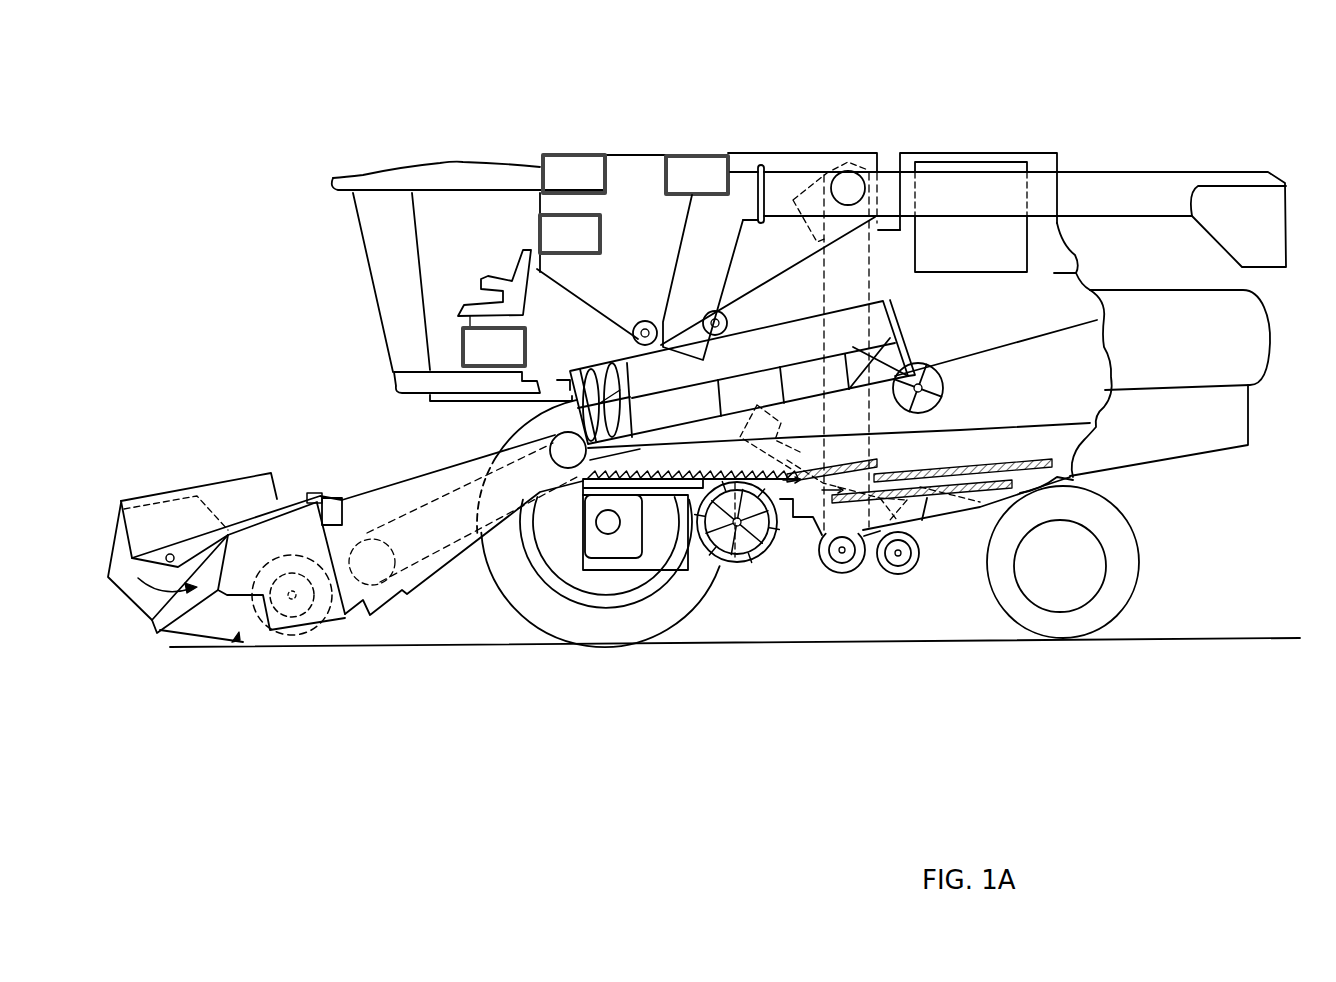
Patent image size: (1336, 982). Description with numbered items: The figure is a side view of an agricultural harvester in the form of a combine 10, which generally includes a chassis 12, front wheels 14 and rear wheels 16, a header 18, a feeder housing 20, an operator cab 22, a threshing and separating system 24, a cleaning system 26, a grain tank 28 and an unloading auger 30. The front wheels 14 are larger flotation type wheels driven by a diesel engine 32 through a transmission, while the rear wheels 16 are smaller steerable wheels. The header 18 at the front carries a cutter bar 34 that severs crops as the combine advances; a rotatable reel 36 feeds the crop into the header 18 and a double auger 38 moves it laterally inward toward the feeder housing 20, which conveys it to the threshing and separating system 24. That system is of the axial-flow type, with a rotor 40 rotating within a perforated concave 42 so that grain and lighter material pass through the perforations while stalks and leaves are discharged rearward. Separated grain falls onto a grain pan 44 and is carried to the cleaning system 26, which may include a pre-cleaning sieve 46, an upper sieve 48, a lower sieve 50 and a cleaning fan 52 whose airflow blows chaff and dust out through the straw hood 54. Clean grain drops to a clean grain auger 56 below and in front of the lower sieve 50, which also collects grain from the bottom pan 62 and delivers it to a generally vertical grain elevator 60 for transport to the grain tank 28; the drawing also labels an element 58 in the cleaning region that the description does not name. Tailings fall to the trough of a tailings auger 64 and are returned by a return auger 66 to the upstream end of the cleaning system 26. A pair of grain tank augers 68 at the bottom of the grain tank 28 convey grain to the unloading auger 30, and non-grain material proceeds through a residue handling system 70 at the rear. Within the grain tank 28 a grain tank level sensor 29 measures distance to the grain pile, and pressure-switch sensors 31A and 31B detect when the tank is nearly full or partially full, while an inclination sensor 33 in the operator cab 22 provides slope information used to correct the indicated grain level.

The combine 10 is at (432, 150).
The chassis 12 is at (1070, 481).
The front wheels 14 is at (517, 605).
The rear wheels 16 is at (1133, 582).
The header 18 is at (205, 478).
The feeder housing 20 is at (407, 478).
The operator cab 22 is at (360, 258).
The threshing and separating system 24 is at (518, 412).
The cleaning system 26 is at (797, 572).
The grain tank 28 is at (598, 153).
The grain tank level sensor 29 is at (697, 175).
The unloading auger 30 is at (1146, 172).
The grain tank level sensor 31A is at (574, 174).
The grain tank level sensor 31B is at (570, 234).
The diesel engine 32 is at (958, 162).
The inclination sensor 33 is at (494, 347).
The cutter bar 34 is at (228, 648).
The reel 36 is at (118, 547).
The double auger 38 is at (293, 600).
The rotor 40 is at (597, 378).
The concave 42 is at (773, 353).
The grain pan 44 is at (575, 470).
The pre-cleaning sieve 46 is at (875, 466).
The upper sieve 48 is at (967, 472).
The lower sieve 50 is at (943, 500).
The cleaning fan 52 is at (740, 557).
The straw hood 54 is at (1257, 330).
The clean grain auger 56 is at (847, 563).
The cleaning fan 58 is at (975, 502).
The grain elevator 60 is at (900, 292).
The bottom pan 62 is at (997, 503).
The tailings auger 64 is at (897, 574).
The return auger 66 is at (803, 442).
The grain tank augers 68 is at (646, 320).
The residue handling system 70 is at (1217, 460).